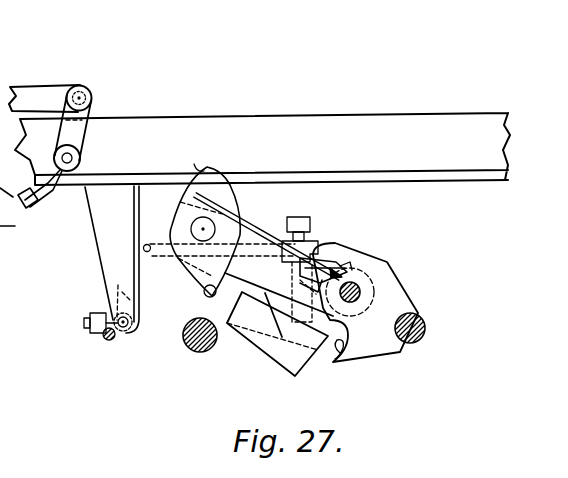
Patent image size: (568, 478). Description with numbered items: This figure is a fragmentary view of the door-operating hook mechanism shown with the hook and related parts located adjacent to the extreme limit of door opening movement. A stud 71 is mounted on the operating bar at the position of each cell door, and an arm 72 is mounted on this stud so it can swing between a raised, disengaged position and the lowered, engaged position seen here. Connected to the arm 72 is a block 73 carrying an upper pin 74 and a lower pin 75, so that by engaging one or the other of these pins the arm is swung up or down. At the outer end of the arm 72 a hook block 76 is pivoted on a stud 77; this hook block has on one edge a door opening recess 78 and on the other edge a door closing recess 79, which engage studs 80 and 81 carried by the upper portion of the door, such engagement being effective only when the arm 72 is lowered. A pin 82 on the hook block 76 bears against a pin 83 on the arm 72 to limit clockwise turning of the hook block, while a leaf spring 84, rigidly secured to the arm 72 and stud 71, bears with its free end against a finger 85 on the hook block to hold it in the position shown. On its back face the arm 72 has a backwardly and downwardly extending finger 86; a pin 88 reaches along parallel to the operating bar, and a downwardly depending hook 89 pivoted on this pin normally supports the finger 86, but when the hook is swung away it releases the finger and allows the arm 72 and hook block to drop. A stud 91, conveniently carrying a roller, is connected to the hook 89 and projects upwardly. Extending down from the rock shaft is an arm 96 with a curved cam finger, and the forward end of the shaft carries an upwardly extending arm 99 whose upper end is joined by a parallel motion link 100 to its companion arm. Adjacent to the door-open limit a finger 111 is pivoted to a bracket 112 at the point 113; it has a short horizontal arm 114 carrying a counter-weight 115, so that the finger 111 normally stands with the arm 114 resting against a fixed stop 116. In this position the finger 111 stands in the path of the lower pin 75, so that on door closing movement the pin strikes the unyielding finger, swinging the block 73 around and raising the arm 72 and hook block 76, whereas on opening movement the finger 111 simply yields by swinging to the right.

The parallel motion link 100 is at (34, 98).
The upwardly extending arm 99 is at (78, 136).
The arm 96 is at (44, 204).
The upper pin 74 is at (205, 172).
The stud 71 is at (190, 232).
The pin 88 is at (151, 253).
The block 73 is at (203, 288).
The lower pin 75 is at (205, 297).
The stud 81 is at (190, 347).
The arm 72 is at (250, 352).
The finger 86 is at (255, 386).
The hook 89 is at (294, 316).
The pin 82 is at (302, 286).
The leaf spring 84 is at (283, 228).
The stud 91 is at (298, 216).
The finger 85 is at (322, 250).
The pin 83 is at (345, 272).
The stud 77 is at (358, 283).
The hook block 76 is at (392, 298).
The stud 80 is at (426, 328).
The door opening recess 78 is at (400, 343).
The door closing recess 79 is at (340, 354).
The bracket 112 is at (110, 249).
The finger 111 is at (117, 288).
The counter-weight 115 is at (97, 313).
The horizontal arm 114 is at (84, 323).
The fixed stop 116 is at (103, 340).
The point 113 is at (120, 333).